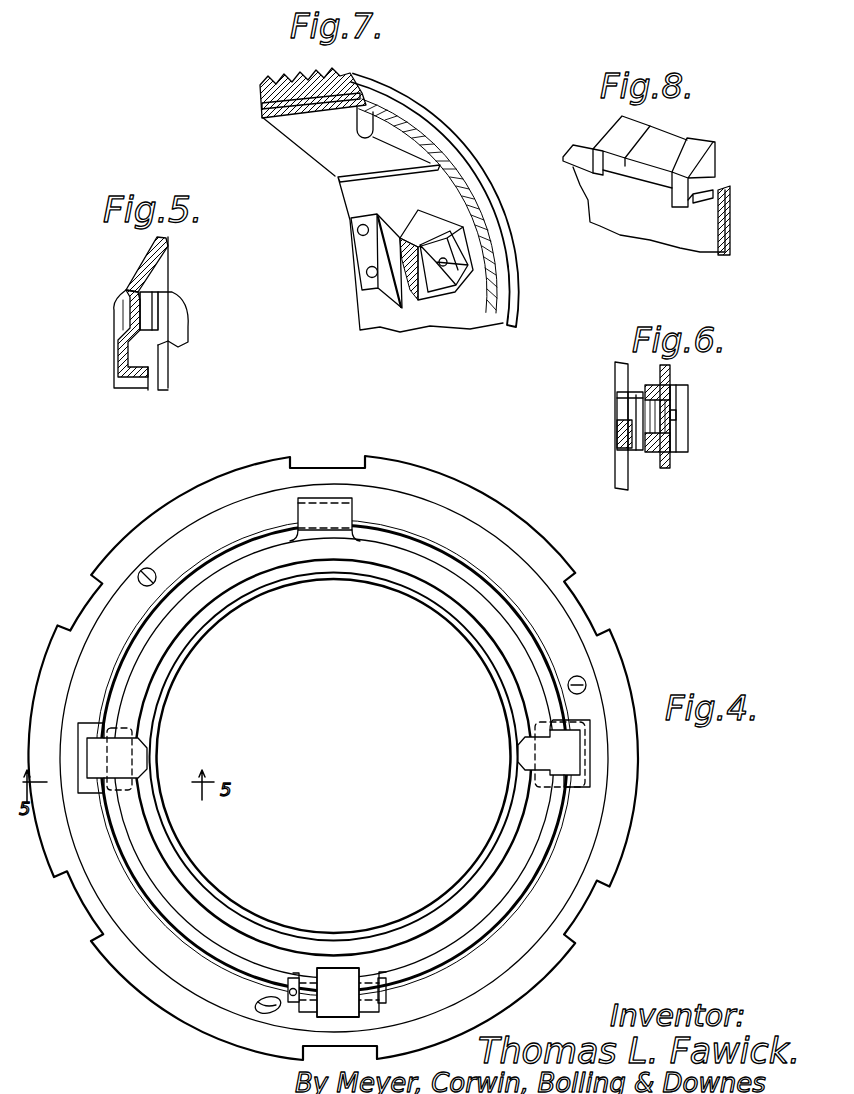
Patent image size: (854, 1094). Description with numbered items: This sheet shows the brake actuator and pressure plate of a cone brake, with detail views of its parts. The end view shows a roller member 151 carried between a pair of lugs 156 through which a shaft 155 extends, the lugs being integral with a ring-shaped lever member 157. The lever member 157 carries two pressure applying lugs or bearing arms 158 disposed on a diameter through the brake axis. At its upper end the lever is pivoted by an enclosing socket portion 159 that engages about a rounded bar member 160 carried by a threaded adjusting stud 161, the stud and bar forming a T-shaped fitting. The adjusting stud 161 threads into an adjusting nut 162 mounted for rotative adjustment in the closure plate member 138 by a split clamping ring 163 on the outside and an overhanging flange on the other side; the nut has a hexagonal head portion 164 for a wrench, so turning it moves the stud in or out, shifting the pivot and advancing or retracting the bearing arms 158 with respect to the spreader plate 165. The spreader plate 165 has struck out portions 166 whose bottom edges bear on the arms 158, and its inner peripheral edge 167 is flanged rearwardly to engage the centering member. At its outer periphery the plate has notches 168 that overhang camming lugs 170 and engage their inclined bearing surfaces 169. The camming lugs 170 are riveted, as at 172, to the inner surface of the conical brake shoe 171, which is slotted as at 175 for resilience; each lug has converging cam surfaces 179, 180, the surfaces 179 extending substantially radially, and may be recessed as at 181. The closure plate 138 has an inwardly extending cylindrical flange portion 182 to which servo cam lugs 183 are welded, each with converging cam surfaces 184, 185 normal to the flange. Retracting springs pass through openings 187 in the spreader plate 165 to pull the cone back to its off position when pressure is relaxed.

In FIG. 8, the closure plate member 138 is at (732, 223).
In FIG. 4, the roller member 151 is at (335, 1018).
In FIG. 4, the shaft 155 is at (295, 976).
In FIG. 4, the lugs 156 is at (305, 1012).
In FIG. 4, the ring-shaped lever member 157 is at (500, 870).
In FIG. 6, the ring-shaped lever member 157 is at (622, 470).
In FIG. 4, the pressure applying lugs or bearing arms 158 is at (97, 756).
In FIG. 5, the pressure applying lugs or bearing arms 158 is at (152, 310).
In FIG. 4, the enclosing socket portion 159 is at (302, 510).
In FIG. 6, the enclosing socket portion 159 is at (627, 412).
In FIG. 6, the rounded bar member 160 is at (627, 438).
In FIG. 6, the threaded adjusting stud 161 is at (670, 403).
In FIG. 6, the adjusting nut 162 is at (650, 385).
In FIG. 6, the split clamping ring 163 is at (672, 438).
In FIG. 6, the hexagonal head portion 164 is at (683, 415).
In FIG. 4, the spreader plate 165 is at (610, 662).
In FIG. 5, the spreader plate 165 is at (140, 274).
In FIG. 4, the struck out portions 166 is at (98, 730).
In FIG. 5, the struck out portions 166 is at (132, 302).
In FIG. 4, the inner peripheral edge 167 is at (224, 612).
In FIG. 5, the inner peripheral edge 167 is at (140, 378).
In FIG. 4, the notches 168 is at (336, 466).
In FIG. 7, the inclined bearing surfaces 169 is at (398, 293).
In FIG. 7, the camming lugs 170 is at (397, 217).
In FIG. 7, the conical brake shoe 171 is at (347, 155).
In FIG. 7, the rivets 172 is at (366, 272).
In FIG. 7, the slots 175 is at (440, 147).
In FIG. 7, the cam surface 179 is at (445, 230).
In FIG. 7, the cam surface 180 is at (452, 298).
In FIG. 7, the recess 181 is at (447, 262).
In FIG. 8, the cylindrical flange portion 182 is at (715, 207).
In FIG. 8, the servo cam lugs 183 is at (657, 153).
In FIG. 8, the cam surface 184 is at (623, 140).
In FIG. 8, the cam surface 185 is at (673, 158).
In FIG. 4, the openings 187 is at (143, 571).